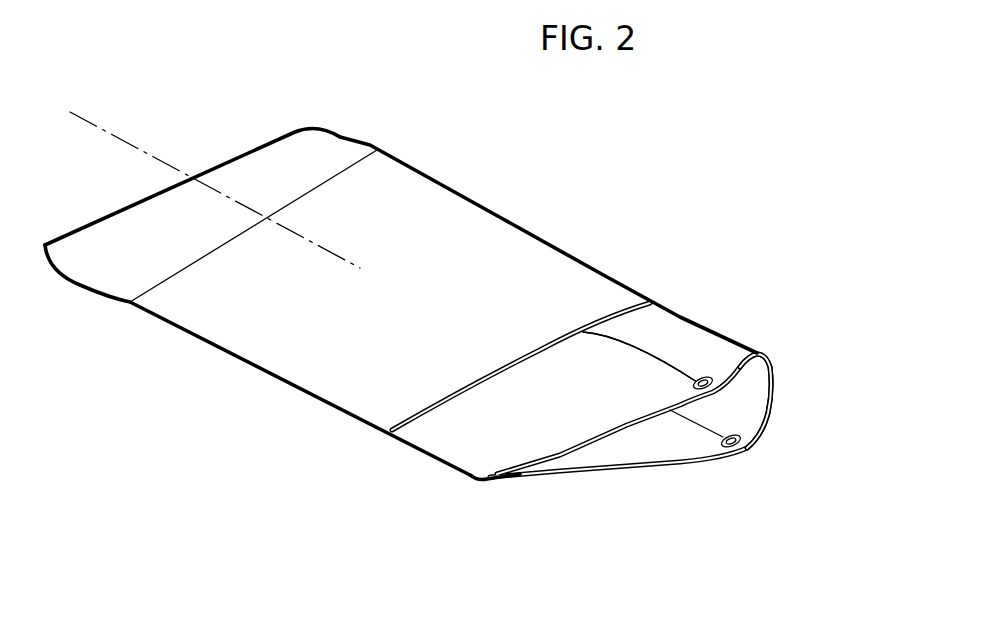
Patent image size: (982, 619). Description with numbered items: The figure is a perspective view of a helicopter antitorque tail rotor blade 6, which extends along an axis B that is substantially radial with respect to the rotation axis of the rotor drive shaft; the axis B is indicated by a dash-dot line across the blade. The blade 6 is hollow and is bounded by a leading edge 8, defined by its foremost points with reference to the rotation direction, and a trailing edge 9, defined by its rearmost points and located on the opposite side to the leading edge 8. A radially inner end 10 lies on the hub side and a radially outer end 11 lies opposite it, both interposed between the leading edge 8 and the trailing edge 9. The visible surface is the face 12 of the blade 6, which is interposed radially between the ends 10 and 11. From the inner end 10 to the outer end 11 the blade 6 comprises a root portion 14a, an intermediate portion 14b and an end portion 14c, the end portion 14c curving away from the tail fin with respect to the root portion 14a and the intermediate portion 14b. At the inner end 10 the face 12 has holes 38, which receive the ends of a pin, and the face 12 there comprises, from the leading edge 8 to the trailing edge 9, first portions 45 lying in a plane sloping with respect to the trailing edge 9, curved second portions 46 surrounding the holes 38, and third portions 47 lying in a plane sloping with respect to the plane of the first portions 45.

The blade 6 is at (401, 291).
The leading edge 8 is at (567, 250).
The trailing edge 9 is at (275, 380).
The radially inner end 10 is at (525, 488).
The radially outer end 11 is at (230, 153).
The face 12 is at (433, 231).
The root portion 14a is at (682, 333).
The intermediate portion 14b is at (465, 257).
The end portion 14c is at (308, 143).
The hole 38 is at (705, 377).
The first portion 45 is at (760, 343).
The curved second portion 46 is at (697, 378).
The third portion 47 is at (627, 423).
The axis B is at (137, 147).